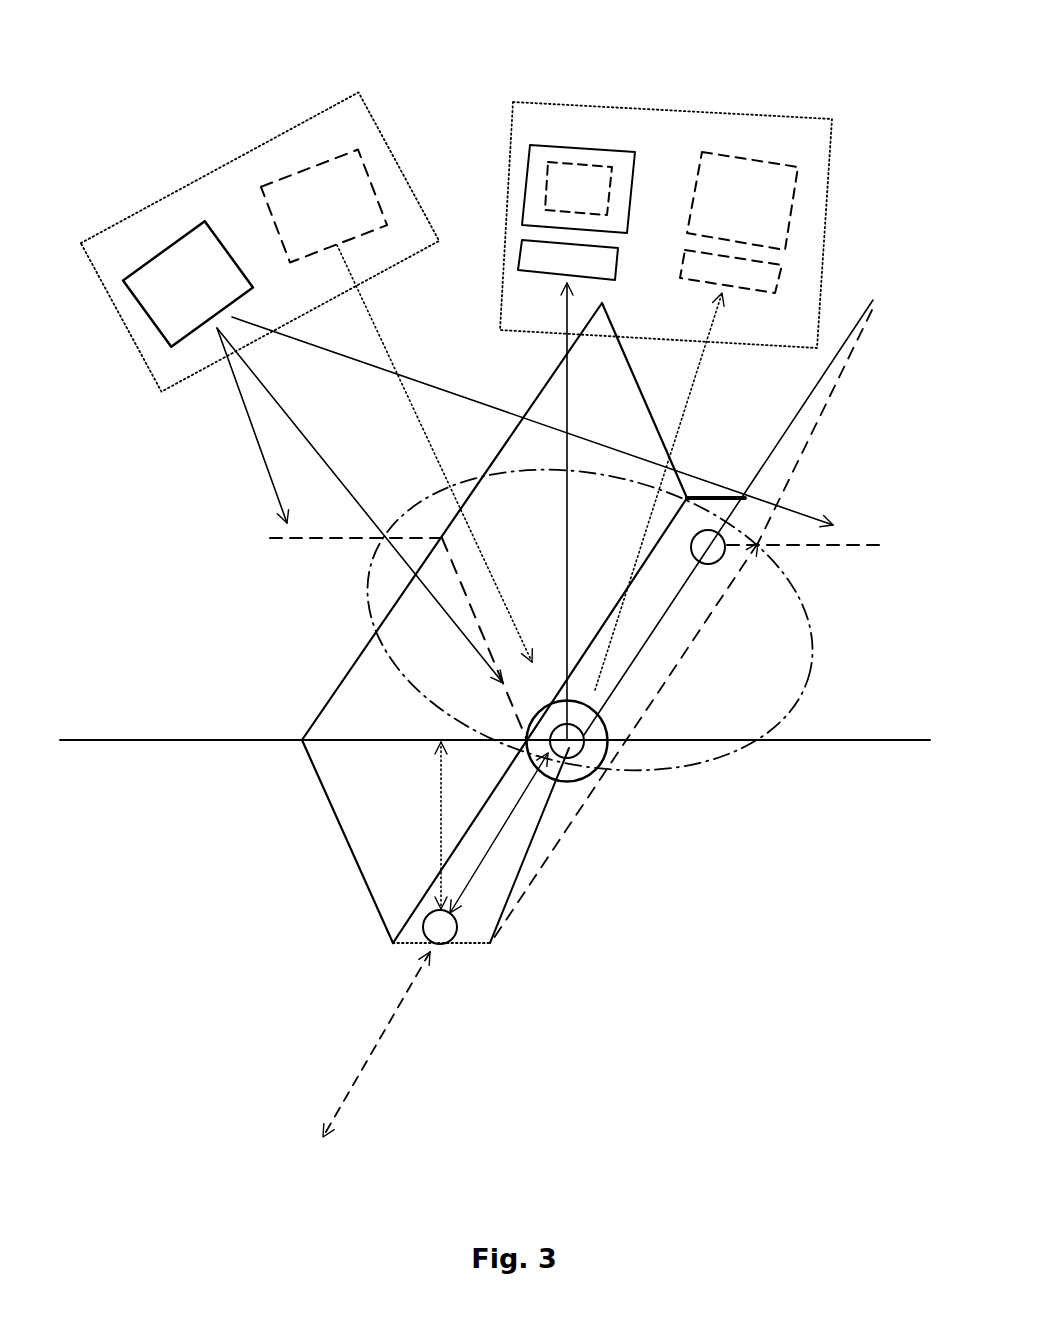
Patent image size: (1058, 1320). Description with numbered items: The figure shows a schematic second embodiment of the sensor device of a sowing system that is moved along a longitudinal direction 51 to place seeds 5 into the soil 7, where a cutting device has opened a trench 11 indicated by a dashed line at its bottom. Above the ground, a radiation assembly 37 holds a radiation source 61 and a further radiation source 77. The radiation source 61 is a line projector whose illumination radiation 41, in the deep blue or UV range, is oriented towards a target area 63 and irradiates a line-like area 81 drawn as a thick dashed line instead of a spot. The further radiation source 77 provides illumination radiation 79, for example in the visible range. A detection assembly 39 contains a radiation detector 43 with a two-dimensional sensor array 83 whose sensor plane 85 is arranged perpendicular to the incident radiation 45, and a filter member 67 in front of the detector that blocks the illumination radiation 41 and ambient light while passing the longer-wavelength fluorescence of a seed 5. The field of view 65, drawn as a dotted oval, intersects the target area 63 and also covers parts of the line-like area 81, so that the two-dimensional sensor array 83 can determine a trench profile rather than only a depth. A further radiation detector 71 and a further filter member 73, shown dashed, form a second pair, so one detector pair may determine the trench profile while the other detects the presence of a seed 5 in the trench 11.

The seed 5 is at (573, 750).
The soil 7 is at (733, 818).
The trench 11 is at (377, 713).
The radiation assembly 37 is at (218, 167).
The detection assembly 39 is at (698, 110).
The illumination radiation 41 is at (398, 373).
The radiation detector 43 is at (568, 145).
The incident radiation 45 is at (567, 397).
The longitudinal direction 51 is at (380, 1040).
The radiation source 61 is at (160, 252).
The target area 63 is at (714, 625).
The field of view 65 is at (813, 657).
The filter member 67 is at (518, 254).
The further radiation detector 71 is at (755, 163).
The further filter member 73 is at (777, 275).
The further radiation source 77 is at (313, 165).
The illumination radiation 79 is at (427, 432).
The line-like area 81 is at (860, 545).
The two-dimensional sensor array 83 is at (583, 165).
The sensor plane 85 is at (577, 188).